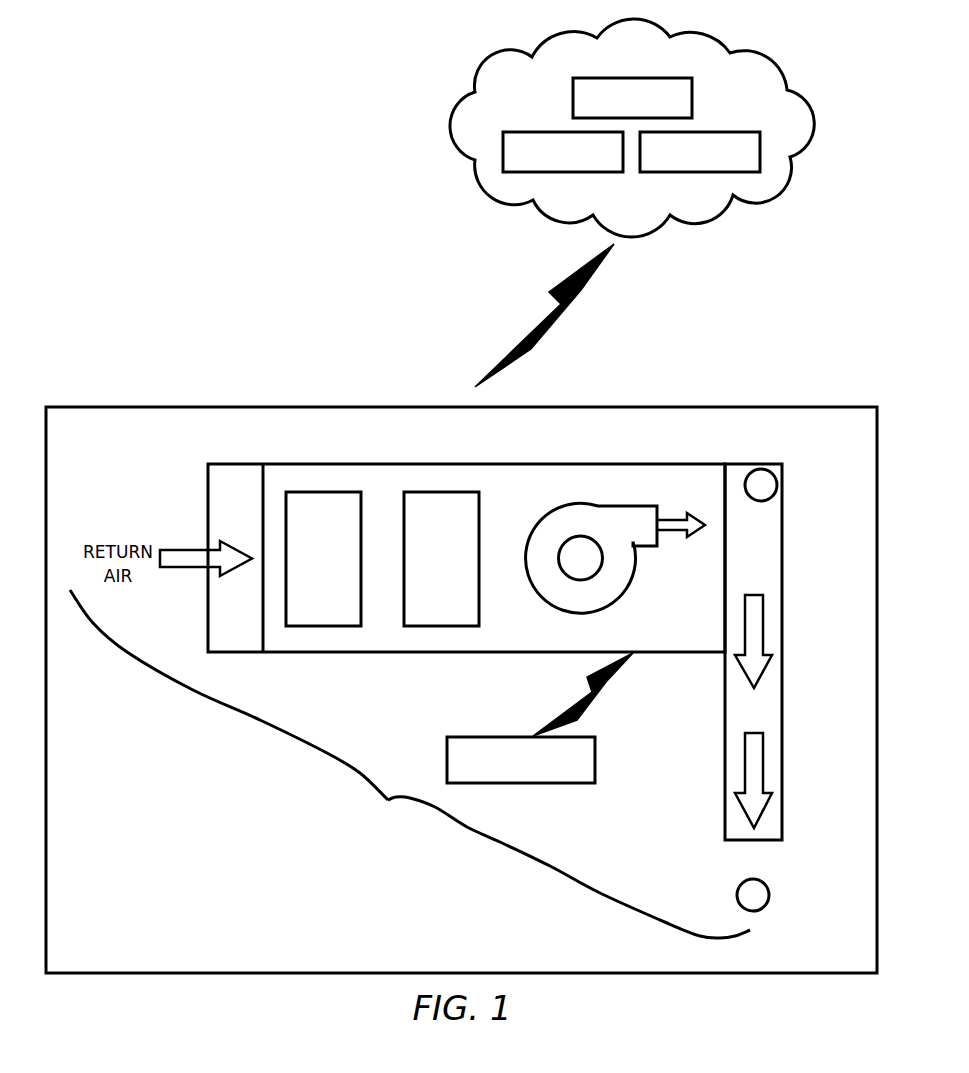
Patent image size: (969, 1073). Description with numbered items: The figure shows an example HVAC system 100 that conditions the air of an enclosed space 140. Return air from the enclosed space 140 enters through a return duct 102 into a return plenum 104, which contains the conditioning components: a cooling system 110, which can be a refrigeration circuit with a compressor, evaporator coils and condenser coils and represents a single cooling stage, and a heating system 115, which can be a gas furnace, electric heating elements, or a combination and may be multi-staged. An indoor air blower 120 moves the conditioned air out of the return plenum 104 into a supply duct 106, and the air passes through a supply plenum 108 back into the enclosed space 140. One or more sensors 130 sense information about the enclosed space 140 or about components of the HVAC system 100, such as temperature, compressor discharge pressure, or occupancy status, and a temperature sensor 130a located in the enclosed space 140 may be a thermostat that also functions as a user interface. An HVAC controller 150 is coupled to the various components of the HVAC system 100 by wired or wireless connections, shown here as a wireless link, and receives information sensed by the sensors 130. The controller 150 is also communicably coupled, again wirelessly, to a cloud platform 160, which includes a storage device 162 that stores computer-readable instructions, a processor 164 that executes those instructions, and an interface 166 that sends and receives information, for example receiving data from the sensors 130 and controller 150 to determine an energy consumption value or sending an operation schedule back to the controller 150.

The HVAC system 100 is at (410, 764).
The return duct 102 is at (240, 652).
The return plenum 104 is at (545, 463).
The supply duct 106 is at (783, 555).
The supply plenum 108 is at (725, 762).
The cooling system 110 is at (307, 582).
The heating system 115 is at (425, 582).
The indoor air blower 120 is at (630, 583).
The sensor 130 is at (778, 478).
The temperature sensor 130a is at (742, 884).
The enclosed space 140 is at (564, 964).
The HVAC controller 150 is at (480, 737).
The cloud platform 160 is at (483, 192).
The storage device 162 is at (545, 132).
The processor 164 is at (718, 132).
The interface 166 is at (631, 78).